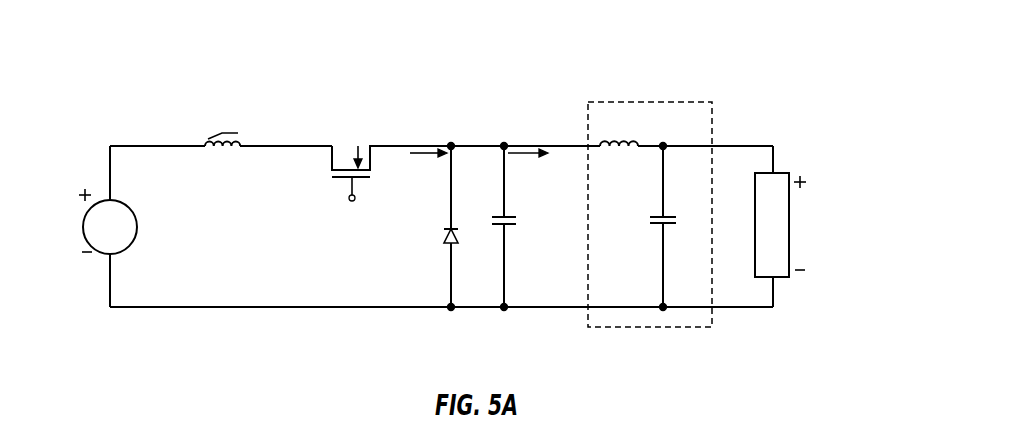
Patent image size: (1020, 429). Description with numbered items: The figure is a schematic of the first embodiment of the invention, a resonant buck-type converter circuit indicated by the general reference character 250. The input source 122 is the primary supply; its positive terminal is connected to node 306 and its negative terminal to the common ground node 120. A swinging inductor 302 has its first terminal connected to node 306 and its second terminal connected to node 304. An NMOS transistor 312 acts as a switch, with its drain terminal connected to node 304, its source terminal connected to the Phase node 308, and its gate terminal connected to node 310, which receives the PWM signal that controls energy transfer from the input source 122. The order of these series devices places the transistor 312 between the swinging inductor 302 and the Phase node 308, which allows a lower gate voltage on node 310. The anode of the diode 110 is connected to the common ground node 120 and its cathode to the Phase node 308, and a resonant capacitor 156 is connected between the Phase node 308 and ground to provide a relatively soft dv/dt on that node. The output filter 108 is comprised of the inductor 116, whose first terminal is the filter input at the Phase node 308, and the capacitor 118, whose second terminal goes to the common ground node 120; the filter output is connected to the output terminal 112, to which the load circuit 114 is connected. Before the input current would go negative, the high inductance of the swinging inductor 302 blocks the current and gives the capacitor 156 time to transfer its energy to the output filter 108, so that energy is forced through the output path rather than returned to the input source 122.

The circuit 250 is at (714, 44).
The node 306 is at (135, 146).
The swinging inductor 302 is at (222, 150).
The node 304 is at (297, 146).
The NMOS transistor 312 is at (362, 191).
The node 310 is at (351, 203).
The Phase node 308 is at (400, 146).
The diode 110 is at (444, 236).
The resonant capacitor 156 is at (512, 228).
The output filter 108 is at (638, 200).
The inductor 116 is at (618, 148).
The capacitor 118 is at (658, 226).
The output terminal 112 is at (773, 146).
The load circuit 114 is at (789, 234).
The input source 122 is at (137, 235).
The common ground node 120 is at (239, 308).